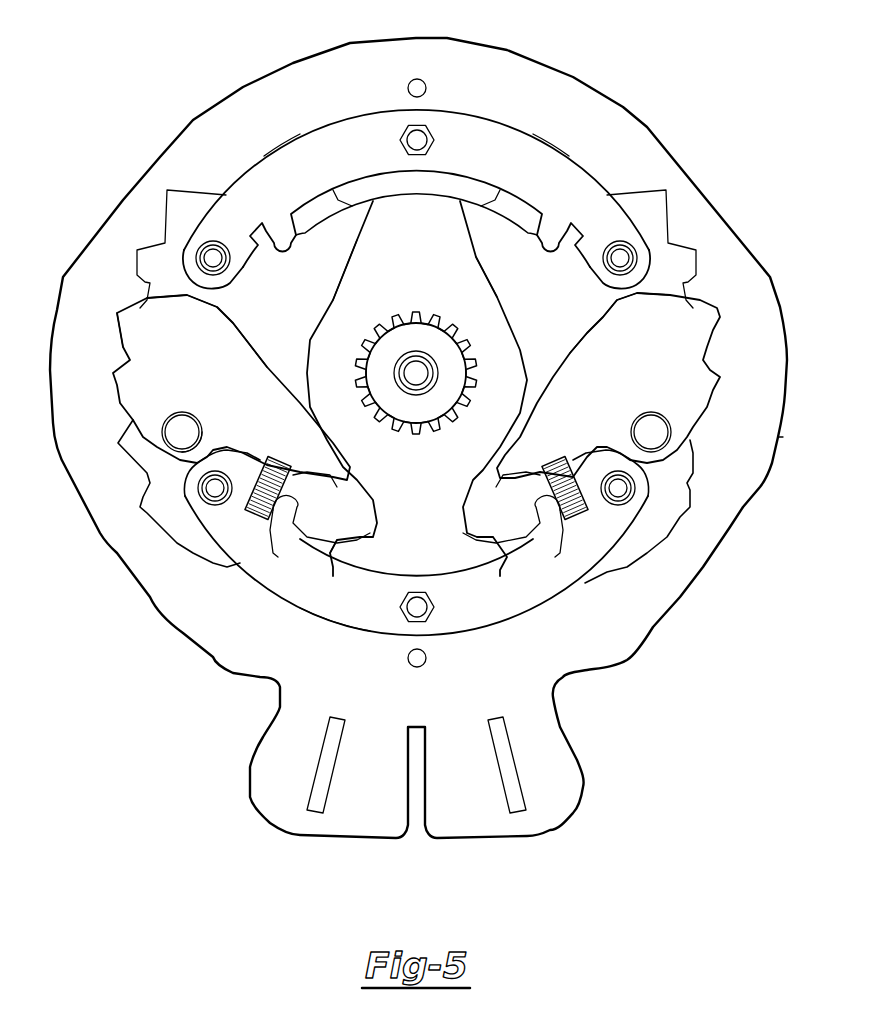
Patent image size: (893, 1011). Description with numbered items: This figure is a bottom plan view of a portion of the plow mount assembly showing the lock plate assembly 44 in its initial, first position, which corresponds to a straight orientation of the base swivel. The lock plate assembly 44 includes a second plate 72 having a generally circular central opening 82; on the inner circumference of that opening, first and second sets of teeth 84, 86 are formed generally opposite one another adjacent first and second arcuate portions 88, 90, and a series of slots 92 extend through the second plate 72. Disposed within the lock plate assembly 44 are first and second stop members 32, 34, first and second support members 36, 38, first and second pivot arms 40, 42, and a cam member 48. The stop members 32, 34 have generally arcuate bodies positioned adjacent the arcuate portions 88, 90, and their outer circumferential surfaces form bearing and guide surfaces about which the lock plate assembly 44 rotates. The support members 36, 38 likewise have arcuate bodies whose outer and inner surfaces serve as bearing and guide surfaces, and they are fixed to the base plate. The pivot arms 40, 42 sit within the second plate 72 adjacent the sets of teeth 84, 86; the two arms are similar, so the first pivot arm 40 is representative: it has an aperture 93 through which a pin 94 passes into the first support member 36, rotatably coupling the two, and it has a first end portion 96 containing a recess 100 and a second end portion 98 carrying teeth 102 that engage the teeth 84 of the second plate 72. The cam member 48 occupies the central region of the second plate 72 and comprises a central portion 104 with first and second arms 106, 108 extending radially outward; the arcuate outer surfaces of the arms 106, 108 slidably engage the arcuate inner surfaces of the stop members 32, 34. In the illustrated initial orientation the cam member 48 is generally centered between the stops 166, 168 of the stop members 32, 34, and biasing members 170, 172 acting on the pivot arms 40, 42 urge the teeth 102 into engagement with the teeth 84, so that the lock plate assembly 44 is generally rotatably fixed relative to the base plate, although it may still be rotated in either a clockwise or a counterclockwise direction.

The second plate 72 is at (500, 62).
The first stop member 32 is at (463, 140).
The second stop member 34 is at (537, 598).
The central opening 82 is at (283, 165).
The first arcuate portion 88 is at (587, 183).
The second arcuate portion 90 is at (338, 626).
The first end portion 96 is at (283, 473).
The cam member 48 is at (335, 300).
The first arm 106 is at (436, 250).
The second arm 108 is at (436, 527).
The stop 166 is at (452, 204).
The stop 168 is at (287, 505).
The first set of teeth 84 is at (153, 252).
The second support member 38 is at (680, 262).
The first pivot arm 40 is at (123, 385).
The second pivot arm 42 is at (662, 342).
The second end portion 98 is at (200, 325).
The central portion 104 is at (505, 350).
The teeth 102 is at (117, 313).
The aperture 93 is at (188, 435).
The pin 94 is at (200, 432).
The biasing member 172 is at (578, 472).
The first support member 36 is at (163, 508).
The second set of teeth 86 is at (703, 467).
The recess 100 is at (245, 505).
The biasing member 170 is at (273, 510).
The slots 92 is at (312, 815).
The lock plate assembly 44 is at (786, 437).